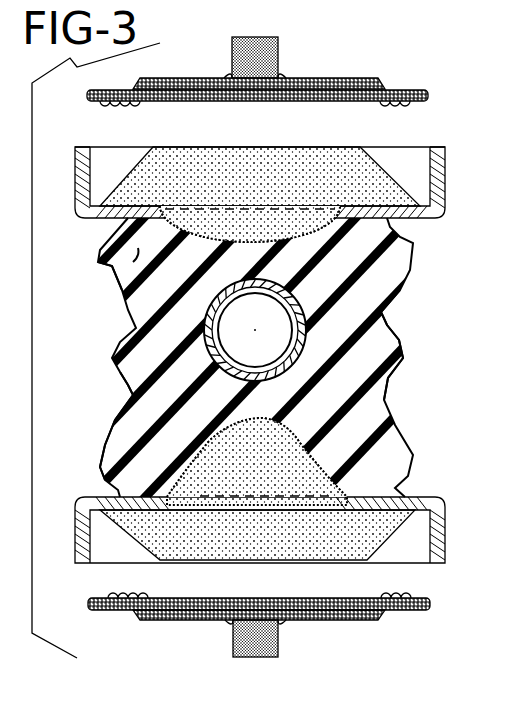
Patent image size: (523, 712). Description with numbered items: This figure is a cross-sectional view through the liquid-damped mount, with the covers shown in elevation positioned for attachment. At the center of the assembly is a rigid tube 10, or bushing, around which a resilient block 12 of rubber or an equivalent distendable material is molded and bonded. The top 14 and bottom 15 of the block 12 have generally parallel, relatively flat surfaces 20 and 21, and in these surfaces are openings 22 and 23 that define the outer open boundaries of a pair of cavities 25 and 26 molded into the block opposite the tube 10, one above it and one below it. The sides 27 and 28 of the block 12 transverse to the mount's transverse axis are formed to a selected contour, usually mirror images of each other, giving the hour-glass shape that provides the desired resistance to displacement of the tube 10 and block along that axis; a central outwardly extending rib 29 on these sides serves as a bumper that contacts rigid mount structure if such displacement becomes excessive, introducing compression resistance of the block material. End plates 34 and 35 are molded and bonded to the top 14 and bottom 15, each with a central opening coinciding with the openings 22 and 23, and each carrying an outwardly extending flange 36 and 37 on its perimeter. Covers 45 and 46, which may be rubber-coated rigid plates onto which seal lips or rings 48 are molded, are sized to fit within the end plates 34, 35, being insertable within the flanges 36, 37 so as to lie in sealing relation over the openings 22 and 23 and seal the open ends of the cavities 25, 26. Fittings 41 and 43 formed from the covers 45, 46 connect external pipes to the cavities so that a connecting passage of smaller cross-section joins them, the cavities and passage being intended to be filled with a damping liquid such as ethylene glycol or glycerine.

The tube 10 is at (261, 357).
The resilient block 12 is at (142, 305).
The top of the block 14 is at (113, 266).
The bottom of the block 15 is at (110, 440).
The flat surface 20 is at (242, 177).
The flat surface 21 is at (244, 527).
The opening 22 is at (171, 158).
The opening 23 is at (178, 490).
The cavity 25 is at (236, 232).
The cavity 26 is at (243, 478).
The side of the block 27 is at (115, 378).
The side of the block 28 is at (393, 320).
The rib 29 is at (400, 360).
The end plate 34 is at (96, 190).
The end plate 35 is at (140, 520).
The flange 36 is at (73, 161).
The flange 37 is at (323, 547).
The fitting 41 is at (231, 62).
The fitting 43 is at (233, 637).
The cover 45 is at (340, 77).
The cover 46 is at (315, 622).
The seal lips 48 is at (412, 116).